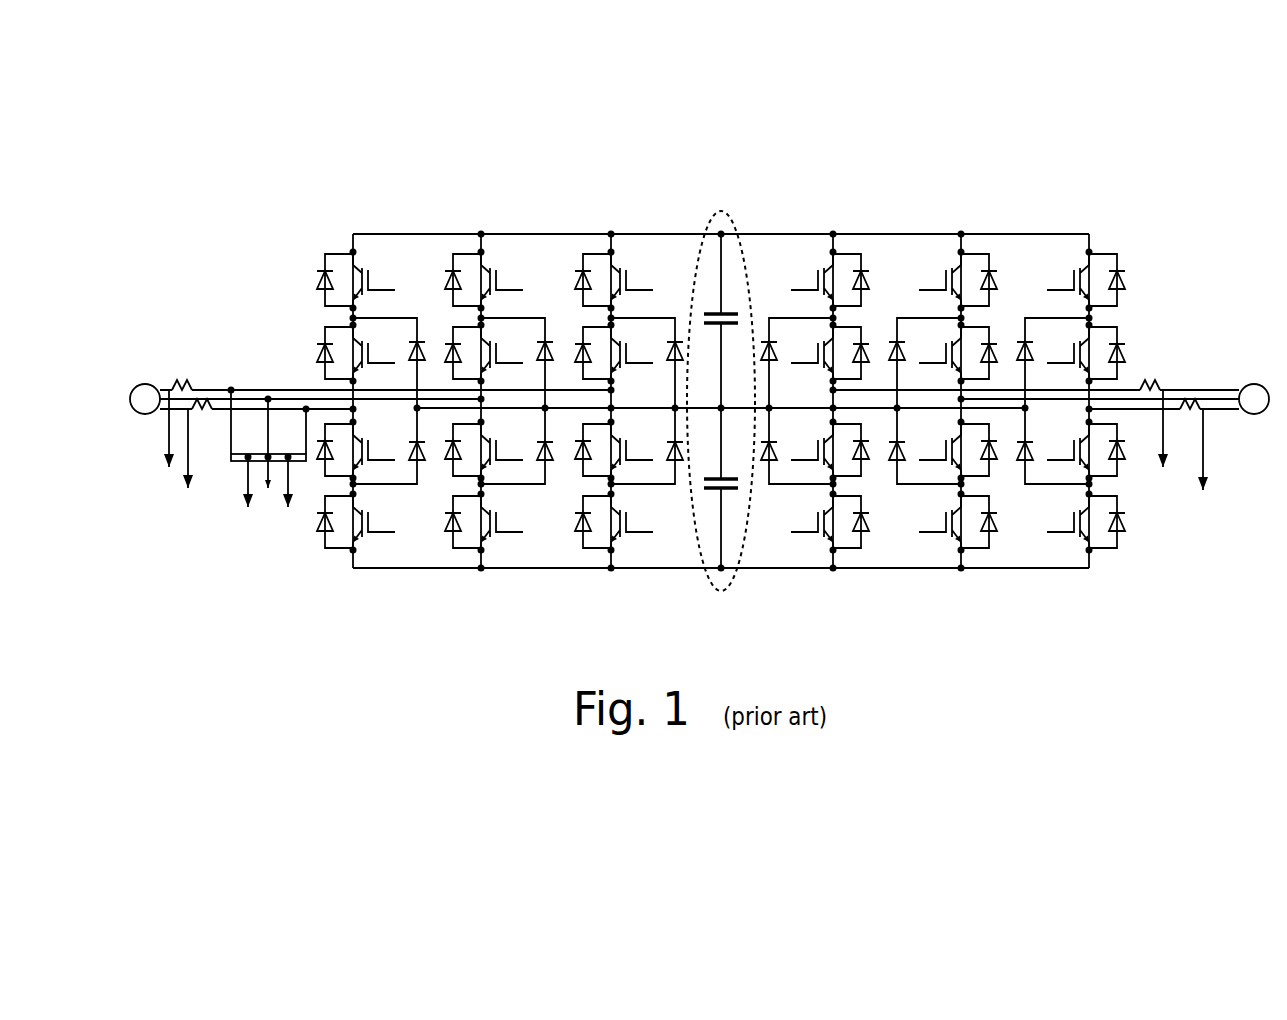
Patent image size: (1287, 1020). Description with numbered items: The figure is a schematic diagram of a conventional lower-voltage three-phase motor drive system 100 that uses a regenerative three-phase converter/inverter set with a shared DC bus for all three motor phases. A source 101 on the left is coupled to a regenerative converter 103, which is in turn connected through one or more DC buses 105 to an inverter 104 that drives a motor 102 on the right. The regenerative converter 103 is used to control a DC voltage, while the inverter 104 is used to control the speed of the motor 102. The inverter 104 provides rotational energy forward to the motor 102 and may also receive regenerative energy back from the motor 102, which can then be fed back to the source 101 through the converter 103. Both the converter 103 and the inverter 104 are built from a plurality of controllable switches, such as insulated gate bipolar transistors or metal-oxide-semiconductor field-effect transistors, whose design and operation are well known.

The motor drive system 100 is at (252, 153).
The source 101 is at (146, 382).
The motor 102 is at (1254, 382).
The regenerative converter 103 is at (314, 213).
The inverter 104 is at (1127, 213).
The DC buses 105 is at (722, 212).